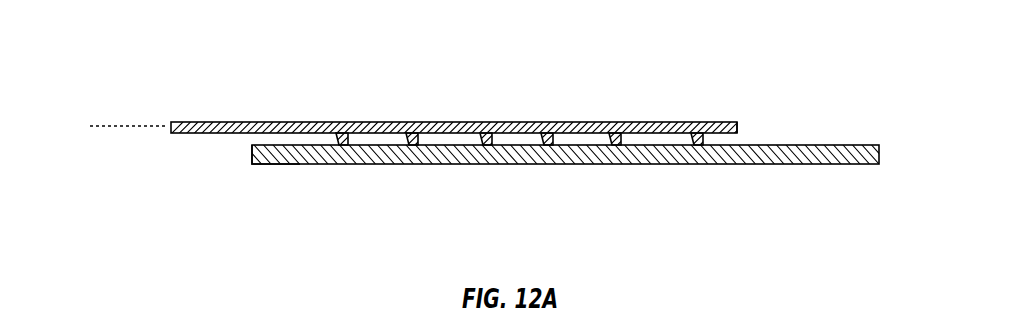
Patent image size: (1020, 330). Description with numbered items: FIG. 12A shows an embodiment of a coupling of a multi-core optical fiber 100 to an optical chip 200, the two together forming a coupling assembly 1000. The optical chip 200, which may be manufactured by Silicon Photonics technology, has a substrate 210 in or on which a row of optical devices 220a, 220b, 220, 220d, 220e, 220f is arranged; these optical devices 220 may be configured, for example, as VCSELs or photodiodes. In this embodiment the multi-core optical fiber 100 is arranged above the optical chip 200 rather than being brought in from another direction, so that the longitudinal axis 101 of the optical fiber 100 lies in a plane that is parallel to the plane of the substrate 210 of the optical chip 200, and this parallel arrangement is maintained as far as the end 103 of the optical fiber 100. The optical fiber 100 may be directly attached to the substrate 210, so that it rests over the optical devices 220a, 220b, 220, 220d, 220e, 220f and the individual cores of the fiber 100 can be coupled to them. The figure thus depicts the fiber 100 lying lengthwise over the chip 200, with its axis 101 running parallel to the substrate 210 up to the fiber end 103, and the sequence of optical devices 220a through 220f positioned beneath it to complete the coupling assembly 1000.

The coupling assembly 1000 is at (742, 66).
The multi-core optical fiber 100 is at (237, 122).
The longitudinal axis 101 is at (146, 125).
The end of the optical fiber 103 is at (737, 126).
The optical chip 200 is at (773, 163).
The substrate 210 is at (283, 156).
The optical device 220 is at (490, 140).
The optical device 220a is at (347, 140).
The optical device 220b is at (417, 140).
The optical device 220d is at (552, 140).
The optical device 220e is at (619, 140).
The optical device 220f is at (702, 140).